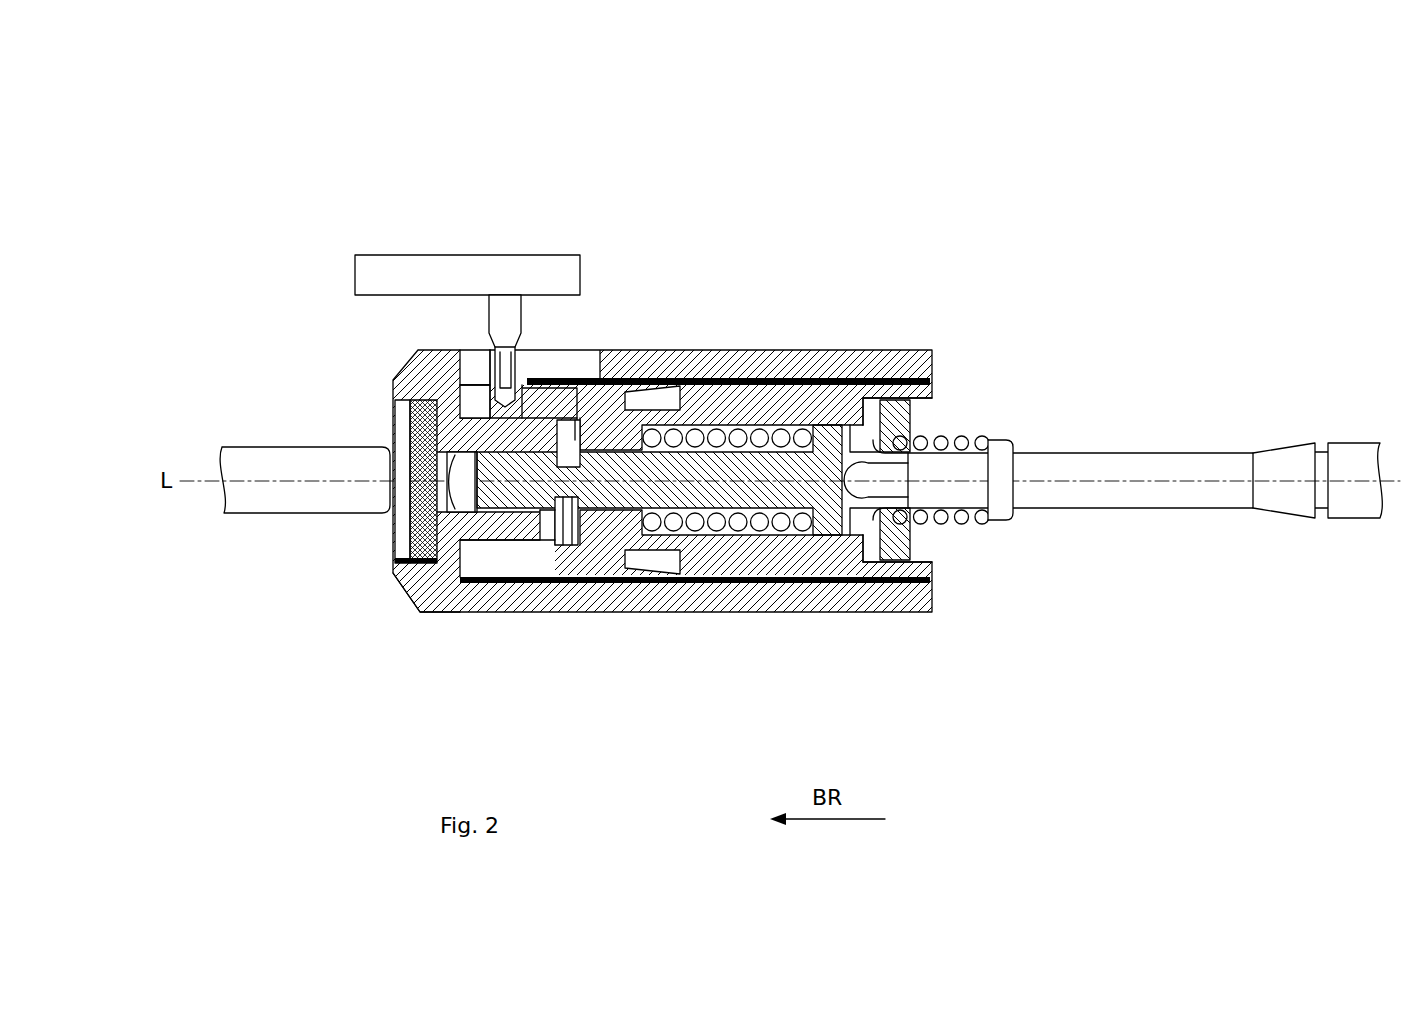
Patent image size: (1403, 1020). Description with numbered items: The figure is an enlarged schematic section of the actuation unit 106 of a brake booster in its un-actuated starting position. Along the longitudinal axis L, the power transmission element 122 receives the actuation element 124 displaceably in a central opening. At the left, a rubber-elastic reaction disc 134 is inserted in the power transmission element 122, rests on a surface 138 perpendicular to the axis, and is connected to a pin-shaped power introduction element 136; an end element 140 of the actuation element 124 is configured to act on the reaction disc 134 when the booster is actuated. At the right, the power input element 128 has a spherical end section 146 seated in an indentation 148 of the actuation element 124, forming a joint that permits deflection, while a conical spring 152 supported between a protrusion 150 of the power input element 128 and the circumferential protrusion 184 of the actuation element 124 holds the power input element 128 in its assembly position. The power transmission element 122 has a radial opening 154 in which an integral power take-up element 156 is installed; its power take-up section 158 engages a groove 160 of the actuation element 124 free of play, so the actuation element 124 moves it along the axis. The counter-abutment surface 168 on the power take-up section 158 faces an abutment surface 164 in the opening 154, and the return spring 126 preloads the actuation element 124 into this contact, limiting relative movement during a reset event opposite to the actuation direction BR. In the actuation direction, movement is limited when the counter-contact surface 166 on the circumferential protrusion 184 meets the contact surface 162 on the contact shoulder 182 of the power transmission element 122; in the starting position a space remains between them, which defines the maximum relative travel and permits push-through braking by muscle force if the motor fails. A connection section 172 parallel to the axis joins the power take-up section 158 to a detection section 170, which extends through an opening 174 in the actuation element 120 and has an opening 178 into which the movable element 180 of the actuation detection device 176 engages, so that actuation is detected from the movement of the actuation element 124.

The actuation unit 106 is at (788, 228).
The actuation element 120 is at (722, 356).
The power transmission element 122 is at (803, 385).
The actuation element 124 is at (838, 432).
The return spring 126 is at (740, 533).
The power input element 128 is at (1278, 462).
The reaction disc 134 is at (467, 480).
The power introduction element 136 is at (250, 462).
The surface 138 is at (400, 424).
The end element 140 is at (415, 560).
The spherical end section 146 is at (907, 547).
The indentation 148 is at (847, 482).
The protrusion 150 is at (1000, 470).
The spring 152 is at (962, 522).
The opening 154 is at (545, 555).
The power take-up element 156 is at (569, 356).
The power take-up section 158 is at (600, 403).
The groove 160 is at (565, 500).
The contact surface 162 is at (857, 490).
The abutment surface 164 is at (578, 533).
The counter-contact surface 166 is at (890, 508).
The counter-abutment surface 168 is at (573, 545).
The detection section 170 is at (460, 352).
The connection section 172 is at (565, 392).
The opening 174 is at (470, 358).
The actuation detection device 176 is at (548, 228).
The opening 178 is at (487, 350).
The movable element 180 is at (510, 296).
The contact shoulder 182 is at (897, 402).
The circumferential protrusion 184 is at (900, 395).